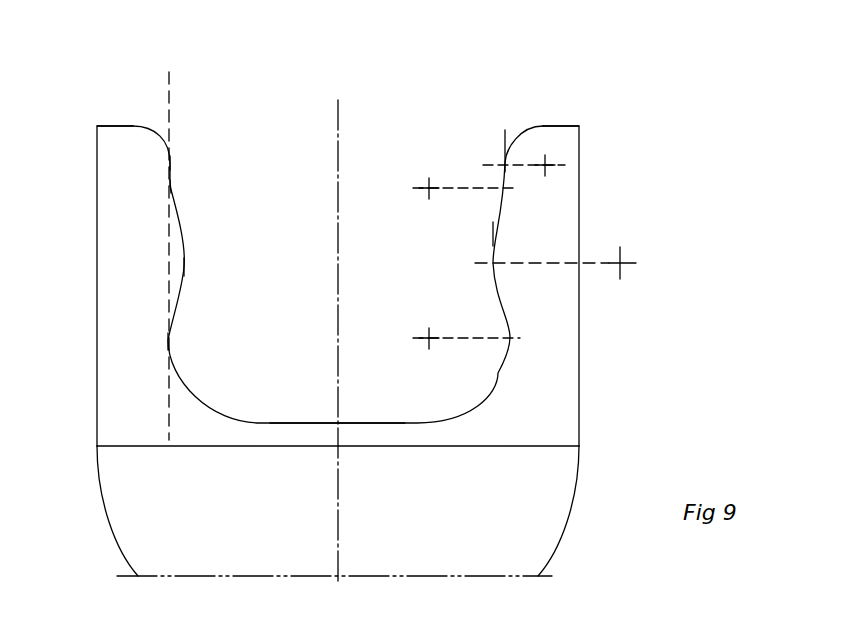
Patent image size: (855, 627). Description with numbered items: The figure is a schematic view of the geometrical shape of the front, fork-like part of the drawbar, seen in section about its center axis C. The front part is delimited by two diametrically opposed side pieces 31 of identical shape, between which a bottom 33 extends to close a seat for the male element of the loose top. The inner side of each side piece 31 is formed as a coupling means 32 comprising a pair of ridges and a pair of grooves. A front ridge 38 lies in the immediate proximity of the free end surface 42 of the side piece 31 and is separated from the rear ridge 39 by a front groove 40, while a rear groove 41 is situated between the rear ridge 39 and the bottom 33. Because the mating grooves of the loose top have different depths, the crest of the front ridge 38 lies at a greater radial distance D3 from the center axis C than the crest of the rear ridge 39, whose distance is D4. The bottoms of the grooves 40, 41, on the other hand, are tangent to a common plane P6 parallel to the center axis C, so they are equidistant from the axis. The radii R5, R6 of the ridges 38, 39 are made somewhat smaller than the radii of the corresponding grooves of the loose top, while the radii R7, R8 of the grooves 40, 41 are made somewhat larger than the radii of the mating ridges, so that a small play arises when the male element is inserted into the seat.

The side piece 31 is at (100, 300).
The coupling means 32 is at (237, 221).
The bottom 33 is at (313, 423).
The front ridge 38 is at (170, 163).
The rear ridge 39 is at (185, 263).
The front groove 40 is at (170, 186).
The rear groove 41 is at (168, 342).
The free end surface 42 is at (117, 126).
The common plane P6 is at (165, 256).
The center axis C is at (340, 492).
The radial distance D3 is at (505, 142).
The radial distance D4 is at (493, 232).
The radius R5 is at (516, 144).
The radius R6 is at (620, 265).
The radius R7 is at (500, 212).
The radius R8 is at (500, 372).